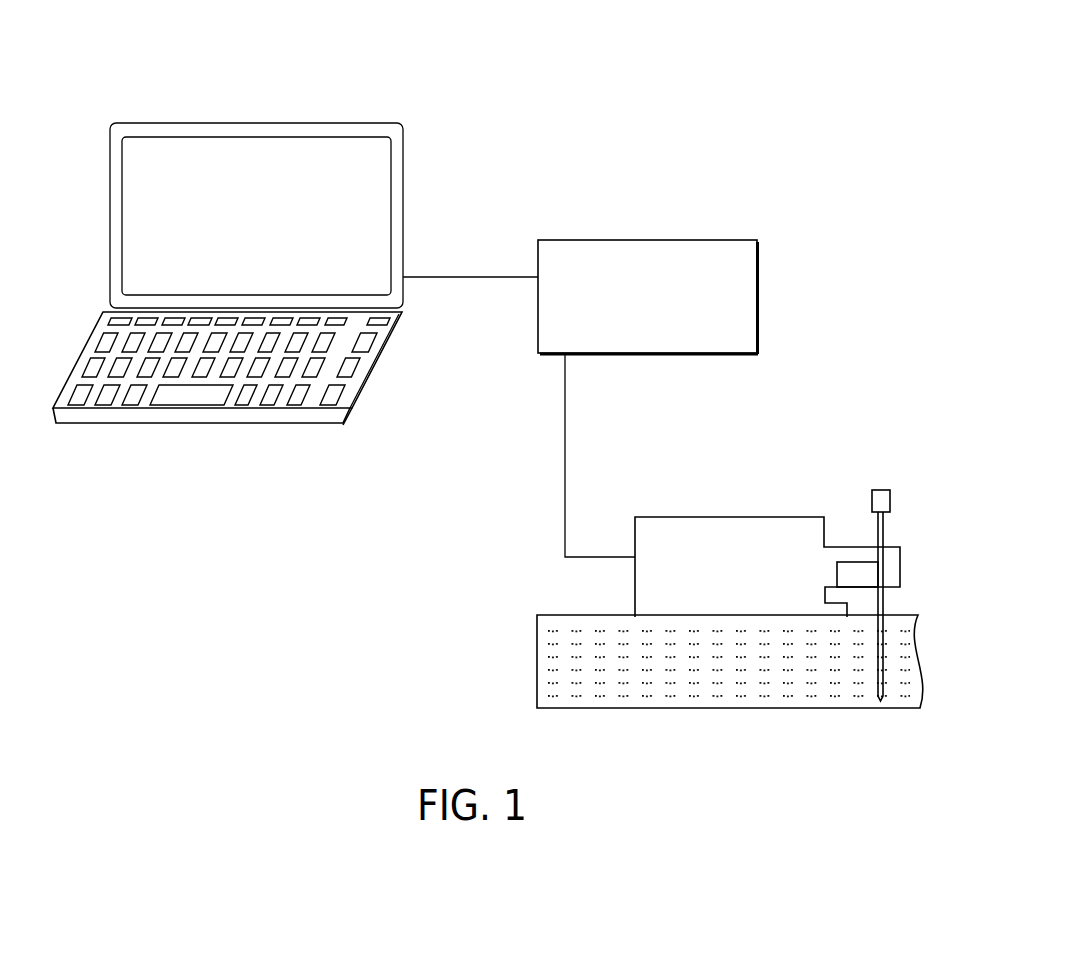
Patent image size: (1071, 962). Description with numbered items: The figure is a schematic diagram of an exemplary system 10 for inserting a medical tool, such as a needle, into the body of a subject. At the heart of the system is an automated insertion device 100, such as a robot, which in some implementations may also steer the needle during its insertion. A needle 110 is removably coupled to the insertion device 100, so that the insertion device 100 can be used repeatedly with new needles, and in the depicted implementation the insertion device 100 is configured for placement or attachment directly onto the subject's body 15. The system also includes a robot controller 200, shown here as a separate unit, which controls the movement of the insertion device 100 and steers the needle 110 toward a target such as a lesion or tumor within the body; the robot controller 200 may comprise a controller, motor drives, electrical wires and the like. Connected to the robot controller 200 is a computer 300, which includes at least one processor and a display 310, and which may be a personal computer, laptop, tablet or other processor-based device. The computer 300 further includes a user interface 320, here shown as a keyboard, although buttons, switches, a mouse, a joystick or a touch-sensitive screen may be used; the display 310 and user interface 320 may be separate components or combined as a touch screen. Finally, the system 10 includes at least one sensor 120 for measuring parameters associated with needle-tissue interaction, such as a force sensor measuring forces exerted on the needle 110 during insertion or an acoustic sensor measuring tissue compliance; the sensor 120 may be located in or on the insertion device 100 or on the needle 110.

The system 10 is at (621, 105).
The subject's body 15 is at (807, 716).
The automated insertion device 100 is at (803, 511).
The needle 110 is at (889, 603).
The sensor 120 is at (829, 572).
The robot controller 200 is at (800, 272).
The computer 300 is at (439, 145).
The display 310 is at (181, 147).
The user interface 320 is at (89, 357).